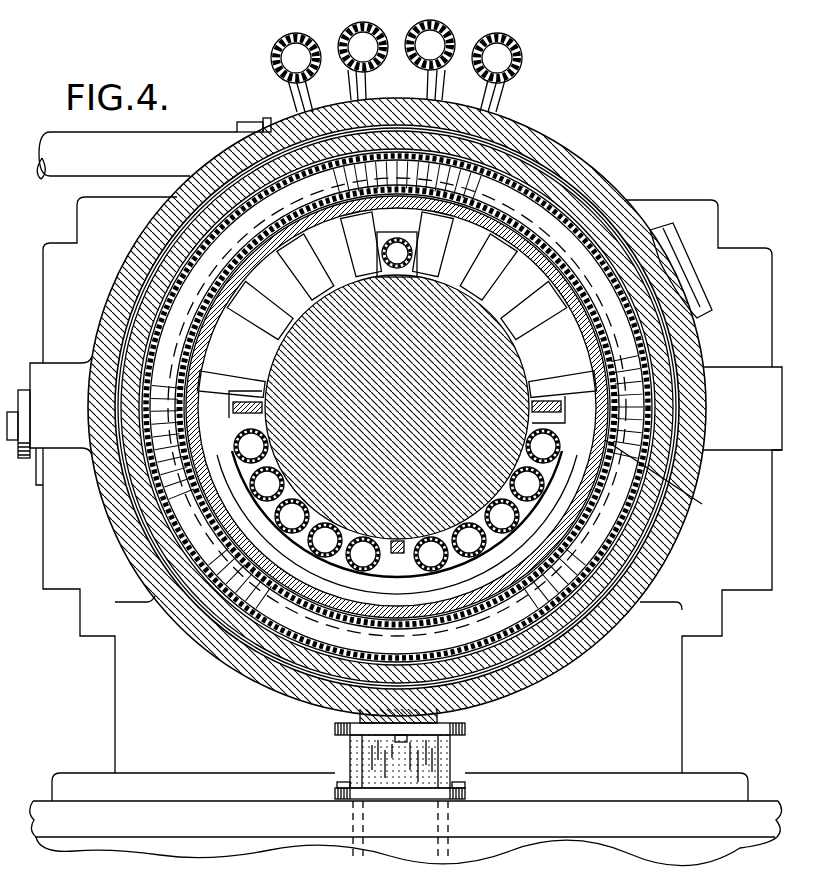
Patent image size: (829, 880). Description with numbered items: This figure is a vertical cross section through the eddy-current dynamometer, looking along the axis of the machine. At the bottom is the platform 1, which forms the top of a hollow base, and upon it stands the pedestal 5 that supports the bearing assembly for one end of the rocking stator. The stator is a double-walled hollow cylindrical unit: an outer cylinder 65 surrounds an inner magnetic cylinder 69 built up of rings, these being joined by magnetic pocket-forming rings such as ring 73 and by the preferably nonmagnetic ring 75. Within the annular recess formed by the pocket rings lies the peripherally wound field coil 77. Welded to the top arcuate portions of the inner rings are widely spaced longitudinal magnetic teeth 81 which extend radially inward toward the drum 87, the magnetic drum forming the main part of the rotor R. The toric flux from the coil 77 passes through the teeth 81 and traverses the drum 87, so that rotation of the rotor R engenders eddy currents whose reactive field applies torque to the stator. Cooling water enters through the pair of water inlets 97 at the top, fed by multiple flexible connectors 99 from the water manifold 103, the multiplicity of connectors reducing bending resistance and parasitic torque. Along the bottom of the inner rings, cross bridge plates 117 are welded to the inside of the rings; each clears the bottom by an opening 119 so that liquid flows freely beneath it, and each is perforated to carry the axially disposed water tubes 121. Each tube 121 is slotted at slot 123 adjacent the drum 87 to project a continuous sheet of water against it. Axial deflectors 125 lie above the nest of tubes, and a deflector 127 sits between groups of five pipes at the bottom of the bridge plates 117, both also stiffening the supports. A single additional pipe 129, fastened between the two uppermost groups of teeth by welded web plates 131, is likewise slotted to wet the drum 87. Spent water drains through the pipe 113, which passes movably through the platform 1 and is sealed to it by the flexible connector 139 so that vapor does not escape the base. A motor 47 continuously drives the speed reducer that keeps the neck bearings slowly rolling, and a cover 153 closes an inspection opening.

The platform 1 is at (763, 812).
The pedestal 5 is at (668, 703).
The motor 47 is at (25, 458).
The outer cylinder 65 is at (108, 339).
The inner magnetic cylinder 69 is at (206, 503).
The pocket-forming ring 73 is at (143, 318).
The nonmagnetic ring 75 is at (248, 266).
The field coil 77 is at (192, 284).
The magnetic tooth 81 is at (318, 301).
The drum 87 is at (475, 375).
The water inlet 97 is at (303, 104).
The flexible connector 99 is at (342, 33).
The water manifold 103 is at (257, 122).
The pipe 113 is at (437, 715).
The cross bridge plate 117 is at (216, 401).
The opening 119 is at (360, 581).
The water tube 121 is at (355, 565).
The slot 123 is at (263, 382).
The deflector 125 is at (233, 408).
The deflector 127 is at (398, 554).
The additional pipe 129 is at (413, 252).
The welded web plate 131 is at (378, 251).
The flexible connector 139 is at (350, 757).
The cover 153 is at (687, 242).
The rotor R is at (662, 481).